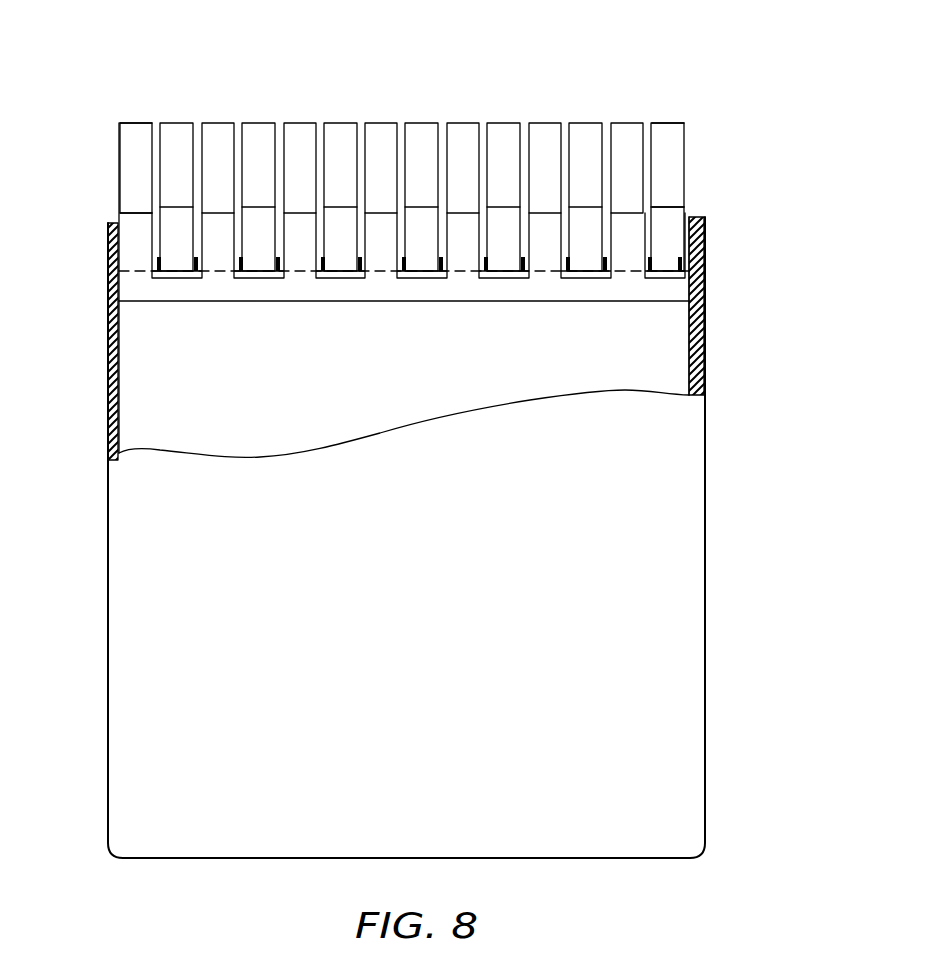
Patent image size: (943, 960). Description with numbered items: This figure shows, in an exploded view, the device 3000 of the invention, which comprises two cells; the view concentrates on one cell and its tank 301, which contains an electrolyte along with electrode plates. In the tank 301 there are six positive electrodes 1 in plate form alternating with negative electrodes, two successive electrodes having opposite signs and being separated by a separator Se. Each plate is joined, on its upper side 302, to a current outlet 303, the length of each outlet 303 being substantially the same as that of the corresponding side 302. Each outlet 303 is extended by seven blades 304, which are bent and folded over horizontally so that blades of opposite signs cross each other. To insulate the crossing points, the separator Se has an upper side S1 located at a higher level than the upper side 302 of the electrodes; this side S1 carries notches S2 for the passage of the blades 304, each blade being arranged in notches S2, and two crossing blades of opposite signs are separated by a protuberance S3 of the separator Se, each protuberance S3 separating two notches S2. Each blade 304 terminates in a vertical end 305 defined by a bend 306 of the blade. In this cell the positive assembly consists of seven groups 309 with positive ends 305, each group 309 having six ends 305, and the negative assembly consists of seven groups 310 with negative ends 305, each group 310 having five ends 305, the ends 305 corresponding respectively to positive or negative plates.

The device 3000 is at (723, 356).
The tank 301 is at (107, 405).
The upper side 302 is at (612, 302).
The current outlet 303 is at (137, 293).
The blades 304 is at (686, 185).
The vertical end 305 is at (128, 168).
The bend 306 is at (126, 206).
The groups with positive ends 309 is at (134, 121).
The groups with negative ends 310 is at (172, 121).
The positive electrodes 1 is at (138, 358).
The separator Se is at (176, 265).
The upper side of separator S1 is at (483, 256).
The notches S2 is at (482, 309).
The protuberance S3 is at (535, 256).